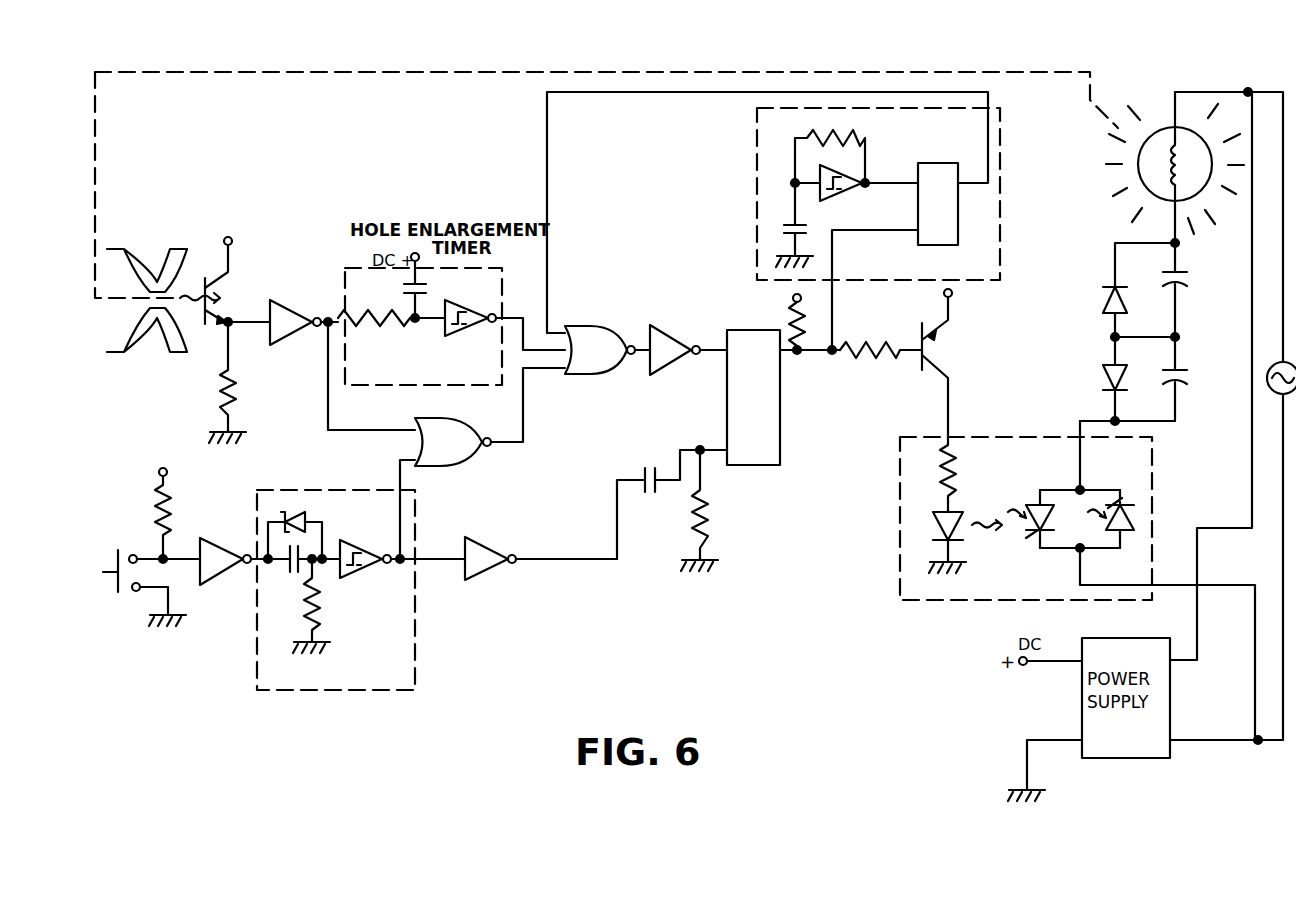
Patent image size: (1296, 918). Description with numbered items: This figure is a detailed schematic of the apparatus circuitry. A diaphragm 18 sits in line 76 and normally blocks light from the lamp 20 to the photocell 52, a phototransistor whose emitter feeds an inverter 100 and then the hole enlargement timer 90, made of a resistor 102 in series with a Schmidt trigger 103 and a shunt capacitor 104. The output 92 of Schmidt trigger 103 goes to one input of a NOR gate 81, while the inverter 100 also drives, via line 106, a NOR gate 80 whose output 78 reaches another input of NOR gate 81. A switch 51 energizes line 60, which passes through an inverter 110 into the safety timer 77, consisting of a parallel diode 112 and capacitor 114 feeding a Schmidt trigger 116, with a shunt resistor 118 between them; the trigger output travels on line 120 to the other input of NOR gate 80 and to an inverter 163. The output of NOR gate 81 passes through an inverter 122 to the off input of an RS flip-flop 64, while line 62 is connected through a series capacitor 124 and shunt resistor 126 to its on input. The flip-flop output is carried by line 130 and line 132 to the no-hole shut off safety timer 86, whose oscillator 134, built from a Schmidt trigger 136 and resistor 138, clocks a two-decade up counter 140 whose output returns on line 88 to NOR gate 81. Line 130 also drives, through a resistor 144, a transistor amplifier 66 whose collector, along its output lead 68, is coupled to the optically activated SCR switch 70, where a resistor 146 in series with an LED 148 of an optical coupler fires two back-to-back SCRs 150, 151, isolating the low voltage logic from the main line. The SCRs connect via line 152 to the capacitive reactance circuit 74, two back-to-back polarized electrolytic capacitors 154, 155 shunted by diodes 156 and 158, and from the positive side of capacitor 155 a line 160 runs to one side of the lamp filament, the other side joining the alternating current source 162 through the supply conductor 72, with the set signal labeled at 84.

The diaphragm 18 is at (128, 248).
The lamp 20 is at (1160, 130).
The switch 51 is at (115, 548).
The photocell 52 is at (235, 296).
The line 60 is at (182, 552).
The line 62 is at (555, 560).
The RS flip-flop 64 is at (782, 418).
The transistor amplifier 66 is at (940, 355).
The line 68 is at (950, 400).
The optically activated SCR switch 70 is at (900, 530).
The line 72 is at (1180, 125).
The capacitive reactance circuit 74 is at (1160, 320).
The line 76 is at (431, 76).
The safety timer 77 is at (418, 655).
The output of NOR gate 80 78 is at (500, 446).
The NOR gate 80 is at (460, 425).
The NOR gate 81 is at (598, 330).
The line 84 is at (710, 340).
The no-hole shut off safety timer 86 is at (757, 160).
The line 88 is at (549, 212).
The hole enlargement timer 90 is at (502, 290).
The output of Schmidt trigger 103 92 is at (520, 312).
The inverter 100 is at (296, 310).
The resistor 102 is at (378, 328).
The Schmidt trigger 103 is at (468, 300).
The capacitor 104 is at (405, 292).
The line 106 is at (328, 403).
The inverter 110 is at (228, 575).
The diode 112 is at (295, 512).
The capacitor 114 is at (303, 590).
The Schmidt trigger 116 is at (370, 572).
The shunt resistor 118 is at (306, 620).
The line 120 is at (416, 512).
The inverter 122 is at (660, 322).
The series capacitor 124 is at (650, 460).
The shunt resistor 126 is at (708, 510).
The line 130 is at (790, 355).
The line 132 is at (835, 300).
The oscillator 134 is at (858, 160).
The Schmidt trigger 136 is at (838, 192).
The resistor 138 is at (845, 135).
The two-decade up counter 140 is at (955, 228).
The resistor 144 is at (875, 355).
The resistor 146 is at (956, 460).
The LED 148 is at (965, 515).
The SCR 150 is at (1037, 528).
The SCR 151 is at (1126, 533).
The line 152 is at (1075, 420).
The electrolytic capacitor 154 is at (1182, 372).
The electrolytic capacitor 155 is at (1178, 282).
The diode 156 is at (1098, 372).
The diode 158 is at (1103, 300).
The line 160 is at (1175, 224).
The alternating current source 162 is at (1266, 366).
The inverter 163 is at (480, 548).